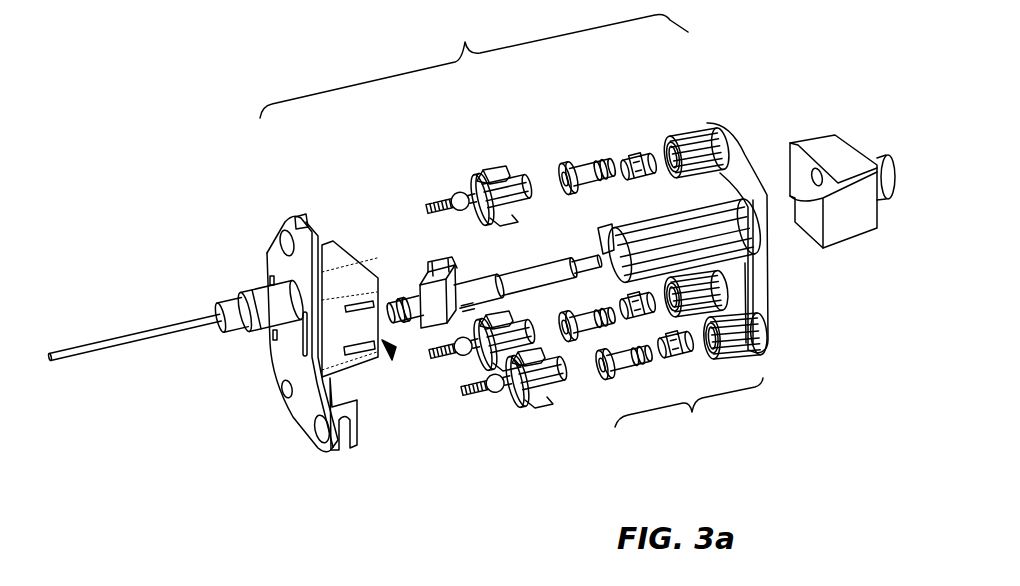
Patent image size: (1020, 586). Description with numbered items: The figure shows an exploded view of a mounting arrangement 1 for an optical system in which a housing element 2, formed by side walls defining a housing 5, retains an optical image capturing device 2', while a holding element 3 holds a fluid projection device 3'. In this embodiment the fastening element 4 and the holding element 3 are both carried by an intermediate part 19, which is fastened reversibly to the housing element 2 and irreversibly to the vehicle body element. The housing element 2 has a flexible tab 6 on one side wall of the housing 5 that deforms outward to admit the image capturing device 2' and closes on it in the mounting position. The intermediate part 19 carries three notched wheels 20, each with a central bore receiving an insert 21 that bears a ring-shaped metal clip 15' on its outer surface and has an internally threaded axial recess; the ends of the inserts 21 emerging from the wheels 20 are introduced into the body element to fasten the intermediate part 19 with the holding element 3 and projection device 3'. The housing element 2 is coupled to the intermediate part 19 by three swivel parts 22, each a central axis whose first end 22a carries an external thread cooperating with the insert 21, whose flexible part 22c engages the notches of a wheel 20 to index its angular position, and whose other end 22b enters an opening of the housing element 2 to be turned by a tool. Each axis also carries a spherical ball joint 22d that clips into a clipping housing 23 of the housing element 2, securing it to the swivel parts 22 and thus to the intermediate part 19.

The mounting arrangement 1 is at (474, 62).
The housing element 2 is at (302, 357).
The image capturing device 2' is at (842, 157).
The holding element 3 is at (658, 241).
The fluid projection device 3' is at (489, 276).
The fastening element 4 is at (689, 415).
The housing 5 is at (397, 356).
The flexible tab 6 is at (367, 357).
The metal clips 15' is at (656, 279).
The intermediate part 19 is at (760, 300).
The notched wheels 20 is at (702, 123).
The inserts 21 is at (592, 165).
The swivel parts 22 is at (470, 177).
The first end 22a is at (520, 187).
The other end 22b is at (427, 208).
The flexible part 22c is at (493, 170).
The spherical ball joint 22d is at (457, 197).
The clipping housing 23 is at (302, 223).